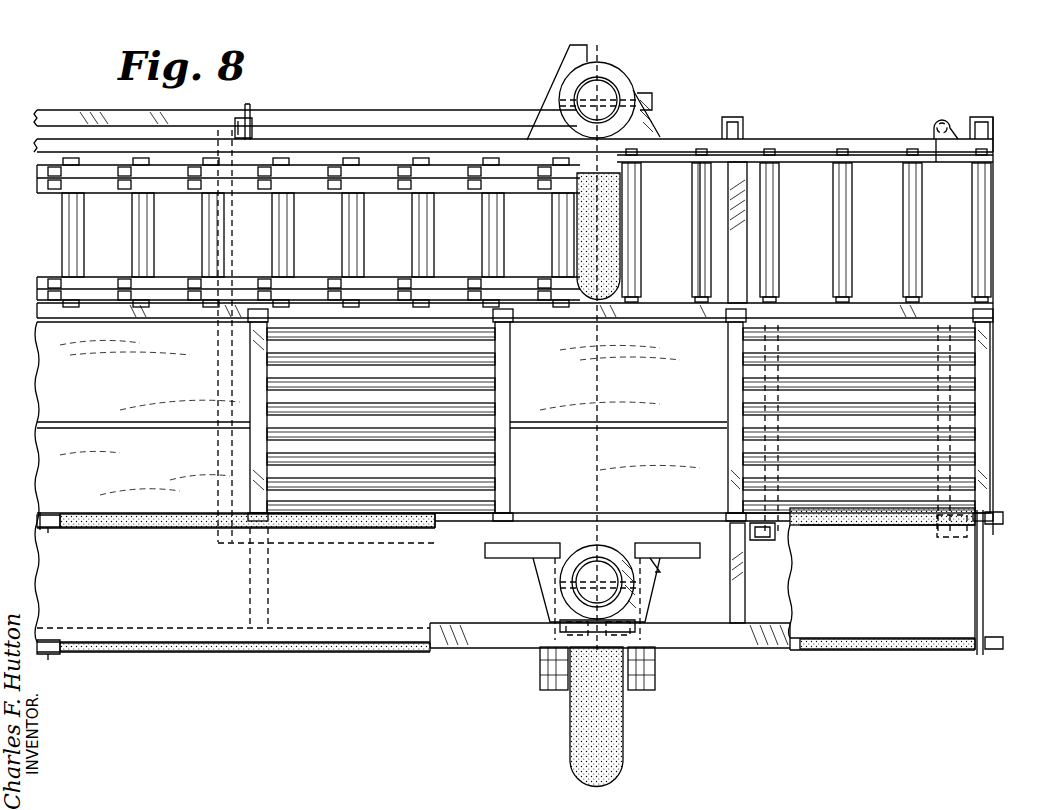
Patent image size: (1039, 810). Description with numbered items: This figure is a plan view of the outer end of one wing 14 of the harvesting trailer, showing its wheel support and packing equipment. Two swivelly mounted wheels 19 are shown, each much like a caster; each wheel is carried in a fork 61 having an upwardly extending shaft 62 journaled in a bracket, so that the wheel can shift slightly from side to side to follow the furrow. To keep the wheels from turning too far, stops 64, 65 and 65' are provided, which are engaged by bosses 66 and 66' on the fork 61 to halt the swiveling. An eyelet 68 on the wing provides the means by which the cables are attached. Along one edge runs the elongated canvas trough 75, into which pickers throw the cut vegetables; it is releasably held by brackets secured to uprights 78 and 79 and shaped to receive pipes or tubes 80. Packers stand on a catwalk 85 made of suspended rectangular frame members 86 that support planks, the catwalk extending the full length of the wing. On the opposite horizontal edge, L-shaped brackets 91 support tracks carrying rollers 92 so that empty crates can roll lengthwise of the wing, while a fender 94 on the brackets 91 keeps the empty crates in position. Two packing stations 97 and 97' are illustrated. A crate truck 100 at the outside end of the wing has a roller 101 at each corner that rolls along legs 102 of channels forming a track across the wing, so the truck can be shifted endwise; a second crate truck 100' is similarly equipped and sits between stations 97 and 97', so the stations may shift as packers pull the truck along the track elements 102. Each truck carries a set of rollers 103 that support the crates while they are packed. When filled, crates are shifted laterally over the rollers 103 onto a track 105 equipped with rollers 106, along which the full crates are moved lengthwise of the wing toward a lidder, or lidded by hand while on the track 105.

The wing 14 is at (404, 659).
The swivelly mounted wheel 19 is at (580, 240).
The fork 61 is at (560, 690).
The shaft 62 is at (600, 85).
The stop 64 is at (556, 617).
The stop 65 is at (673, 570).
The stop 65' is at (593, 88).
The boss 66 is at (610, 623).
The boss 66' is at (659, 89).
The eyelet 68 is at (945, 120).
The elongated canvas trough 75 is at (880, 645).
The upright 78 is at (50, 657).
The upright 79 is at (48, 526).
The pipe or tube 80 is at (700, 518).
The catwalk 85 is at (32, 381).
The frame member 86 is at (218, 375).
The L-shaped bracket 91 is at (235, 130).
The roller 92 is at (137, 177).
The fender 94 is at (246, 114).
The packing station 97 is at (618, 396).
The packing station 97' is at (143, 408).
The crate truck 100 is at (763, 417).
The crate truck 100' is at (228, 417).
The roller 101 is at (972, 306).
The leg of channel 102 is at (78, 516).
The roller 103 is at (346, 416).
The track 105 is at (822, 172).
The roller 106 is at (207, 217).